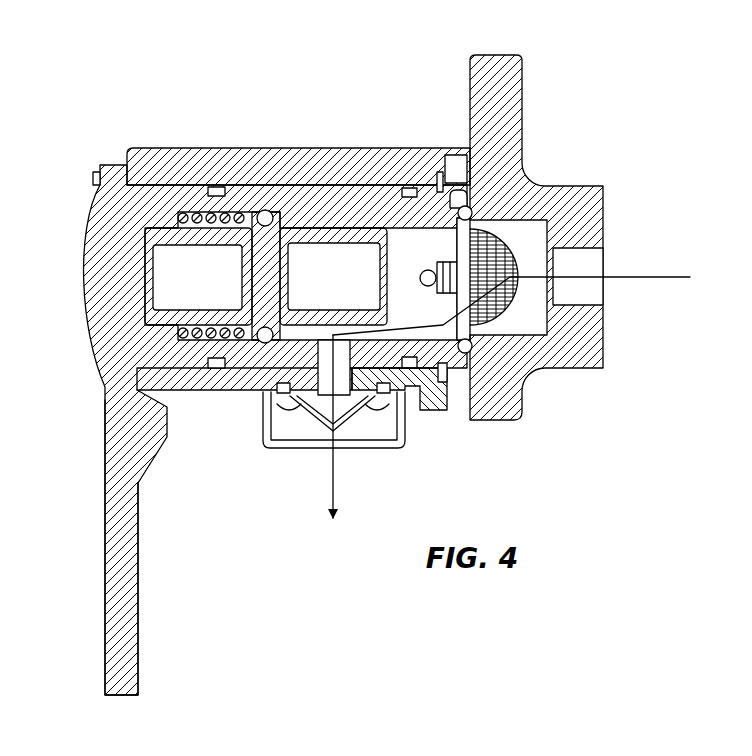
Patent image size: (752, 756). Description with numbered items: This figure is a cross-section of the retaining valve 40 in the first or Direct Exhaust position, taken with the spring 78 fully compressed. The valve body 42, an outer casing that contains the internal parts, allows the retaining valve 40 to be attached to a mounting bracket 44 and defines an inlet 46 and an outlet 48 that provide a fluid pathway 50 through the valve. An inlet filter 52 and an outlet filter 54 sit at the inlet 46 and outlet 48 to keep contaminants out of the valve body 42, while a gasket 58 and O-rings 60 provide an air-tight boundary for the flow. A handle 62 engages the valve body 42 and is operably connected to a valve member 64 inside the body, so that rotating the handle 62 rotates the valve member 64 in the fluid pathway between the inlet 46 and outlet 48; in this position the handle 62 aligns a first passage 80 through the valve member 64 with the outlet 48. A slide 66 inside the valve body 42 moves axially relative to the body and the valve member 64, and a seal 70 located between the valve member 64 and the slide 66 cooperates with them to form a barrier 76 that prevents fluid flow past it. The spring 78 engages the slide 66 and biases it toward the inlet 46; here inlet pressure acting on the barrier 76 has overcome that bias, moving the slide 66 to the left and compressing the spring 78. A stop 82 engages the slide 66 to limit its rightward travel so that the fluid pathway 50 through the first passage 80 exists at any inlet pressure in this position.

The retaining valve 40 is at (78, 93).
The valve body 42 is at (185, 392).
The mounting bracket 44 is at (522, 58).
The inlet 46 is at (447, 412).
The outlet 48 is at (393, 332).
The fluid pathway 50 is at (672, 277).
The inlet filter 52 is at (478, 238).
The outlet filter 54 is at (358, 422).
The gasket 58 is at (478, 376).
The O-rings 60 is at (215, 185).
The handle 62 is at (104, 578).
The valve member 64 is at (240, 372).
The slide 66 is at (350, 200).
The seal 70 is at (268, 205).
The barrier 76 is at (293, 225).
The spring 78 is at (240, 210).
The first passage 80 is at (325, 388).
The stop 82 is at (425, 273).